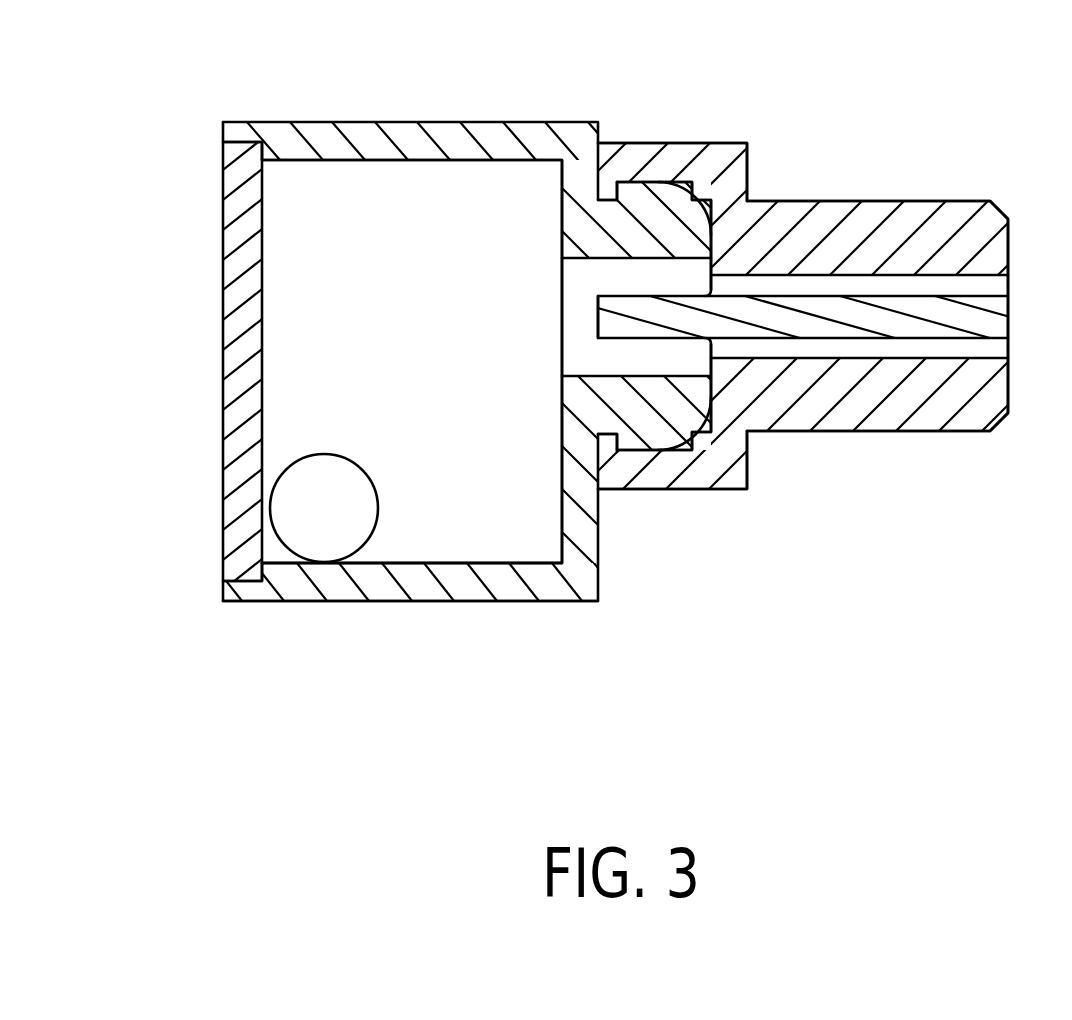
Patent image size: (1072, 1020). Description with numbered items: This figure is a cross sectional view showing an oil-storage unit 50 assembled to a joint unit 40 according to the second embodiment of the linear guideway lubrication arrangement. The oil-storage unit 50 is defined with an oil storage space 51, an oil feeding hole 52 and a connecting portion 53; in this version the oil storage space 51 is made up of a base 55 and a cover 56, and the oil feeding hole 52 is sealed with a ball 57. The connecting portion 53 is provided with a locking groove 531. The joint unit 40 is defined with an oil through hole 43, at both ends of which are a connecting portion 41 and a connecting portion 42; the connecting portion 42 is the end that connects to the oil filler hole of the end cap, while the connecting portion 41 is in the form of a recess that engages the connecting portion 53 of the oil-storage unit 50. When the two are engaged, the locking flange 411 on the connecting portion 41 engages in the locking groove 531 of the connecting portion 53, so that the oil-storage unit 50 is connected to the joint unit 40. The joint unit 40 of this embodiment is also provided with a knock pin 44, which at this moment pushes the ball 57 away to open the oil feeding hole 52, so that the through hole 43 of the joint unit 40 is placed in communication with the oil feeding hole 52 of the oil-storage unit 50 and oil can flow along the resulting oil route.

The joint unit 40 is at (748, 168).
The connecting portion 41 is at (697, 435).
The locking flange 411 is at (608, 188).
The connecting portion 42 is at (927, 237).
The through hole 43 is at (797, 348).
The knock pin 44 is at (940, 318).
The oil-storage unit 50 is at (322, 122).
The oil storage space 51 is at (328, 418).
The oil feeding hole 52 is at (583, 287).
The connecting portion 53 is at (650, 218).
The locking groove 531 is at (618, 443).
The base 55 is at (412, 583).
The cover 56 is at (252, 264).
The ball 57 is at (323, 527).